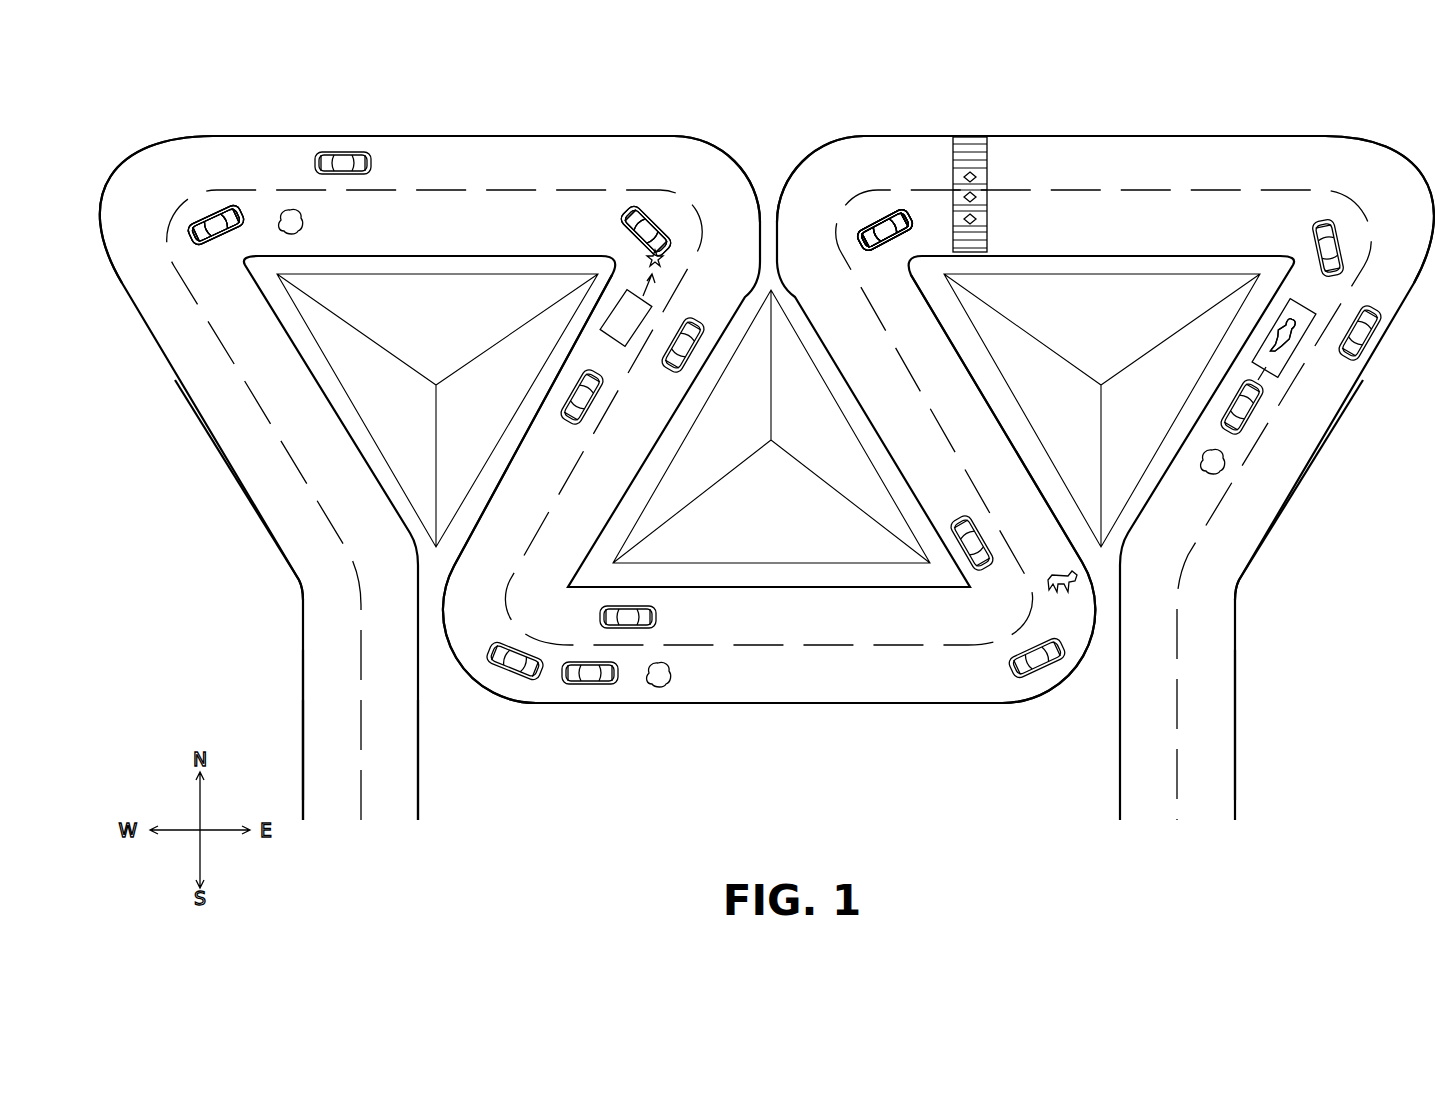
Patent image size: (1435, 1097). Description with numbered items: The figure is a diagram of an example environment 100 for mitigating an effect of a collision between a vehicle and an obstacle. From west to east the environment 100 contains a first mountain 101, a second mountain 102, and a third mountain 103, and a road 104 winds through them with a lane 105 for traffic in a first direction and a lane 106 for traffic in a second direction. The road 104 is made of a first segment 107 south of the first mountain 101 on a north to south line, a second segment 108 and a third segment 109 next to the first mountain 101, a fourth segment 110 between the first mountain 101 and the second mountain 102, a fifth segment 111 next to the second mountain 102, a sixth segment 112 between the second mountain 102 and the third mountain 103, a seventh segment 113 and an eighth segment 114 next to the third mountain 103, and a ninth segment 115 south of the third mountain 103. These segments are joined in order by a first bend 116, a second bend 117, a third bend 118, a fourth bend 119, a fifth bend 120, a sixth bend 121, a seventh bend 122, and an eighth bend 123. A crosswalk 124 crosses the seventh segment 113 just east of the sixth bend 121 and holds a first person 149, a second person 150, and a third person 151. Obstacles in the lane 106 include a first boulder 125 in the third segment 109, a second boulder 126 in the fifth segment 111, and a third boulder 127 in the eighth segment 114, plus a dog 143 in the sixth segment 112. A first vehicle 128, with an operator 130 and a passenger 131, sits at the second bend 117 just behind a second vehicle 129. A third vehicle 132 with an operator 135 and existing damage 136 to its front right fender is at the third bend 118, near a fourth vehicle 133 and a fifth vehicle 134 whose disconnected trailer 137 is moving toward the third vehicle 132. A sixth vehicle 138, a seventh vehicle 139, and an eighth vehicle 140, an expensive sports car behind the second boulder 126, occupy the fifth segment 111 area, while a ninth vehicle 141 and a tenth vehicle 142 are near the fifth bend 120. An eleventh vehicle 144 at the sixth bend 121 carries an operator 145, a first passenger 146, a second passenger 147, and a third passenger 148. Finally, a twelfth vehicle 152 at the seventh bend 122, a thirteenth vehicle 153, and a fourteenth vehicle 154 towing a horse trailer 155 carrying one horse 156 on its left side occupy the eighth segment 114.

The environment 100 is at (166, 62).
The first mountain 101 is at (372, 407).
The second mountain 102 is at (820, 555).
The third mountain 103 is at (1132, 466).
The road 104 is at (361, 898).
The lane 105 is at (331, 810).
The lane 106 is at (393, 810).
The first segment 107 is at (302, 716).
The second segment 108 is at (234, 481).
The third segment 109 is at (470, 136).
The fourth segment 110 is at (532, 421).
The fifth segment 111 is at (778, 705).
The sixth segment 112 is at (1018, 429).
The seventh segment 113 is at (1125, 136).
The eighth segment 114 is at (1334, 427).
The ninth segment 115 is at (1237, 731).
The first bend 116 is at (301, 592).
The second bend 117 is at (139, 167).
The third bend 118 is at (717, 141).
The fourth bend 119 is at (466, 671).
The fifth bend 120 is at (1073, 671).
The sixth bend 121 is at (790, 166).
The seventh bend 122 is at (1405, 174).
The eighth bend 123 is at (1238, 592).
The crosswalk 124 is at (969, 138).
The first boulder 125 is at (290, 210).
The second boulder 126 is at (655, 688).
The third boulder 127 is at (1225, 464).
The first vehicle 128 is at (218, 222).
The second vehicle 129 is at (346, 154).
The operator 130 is at (222, 210).
The passenger 131 is at (240, 218).
The third vehicle 132 is at (630, 215).
The fourth vehicle 133 is at (705, 355).
The fifth vehicle 134 is at (598, 405).
The operator 135 is at (650, 222).
The existing damage 136 is at (647, 252).
The trailer 137 is at (624, 338).
The sixth vehicle 138 is at (524, 672).
The seventh vehicle 139 is at (657, 619).
The eighth vehicle 140 is at (592, 684).
The ninth vehicle 141 is at (1030, 668).
The tenth vehicle 142 is at (983, 575).
The dog 143 is at (1051, 573).
The eleventh vehicle 144 is at (872, 222).
The operator 145 is at (880, 220).
The first passenger 146 is at (898, 226).
The second passenger 147 is at (870, 232).
The third passenger 148 is at (878, 246).
The first person 149 is at (977, 177).
The second person 150 is at (977, 197).
The third person 151 is at (977, 219).
The twelfth vehicle 152 is at (1325, 232).
The thirteenth vehicle 153 is at (1363, 338).
The fourteenth vehicle 154 is at (1258, 416).
The horse trailer 155 is at (1300, 302).
The horse 156 is at (1290, 345).